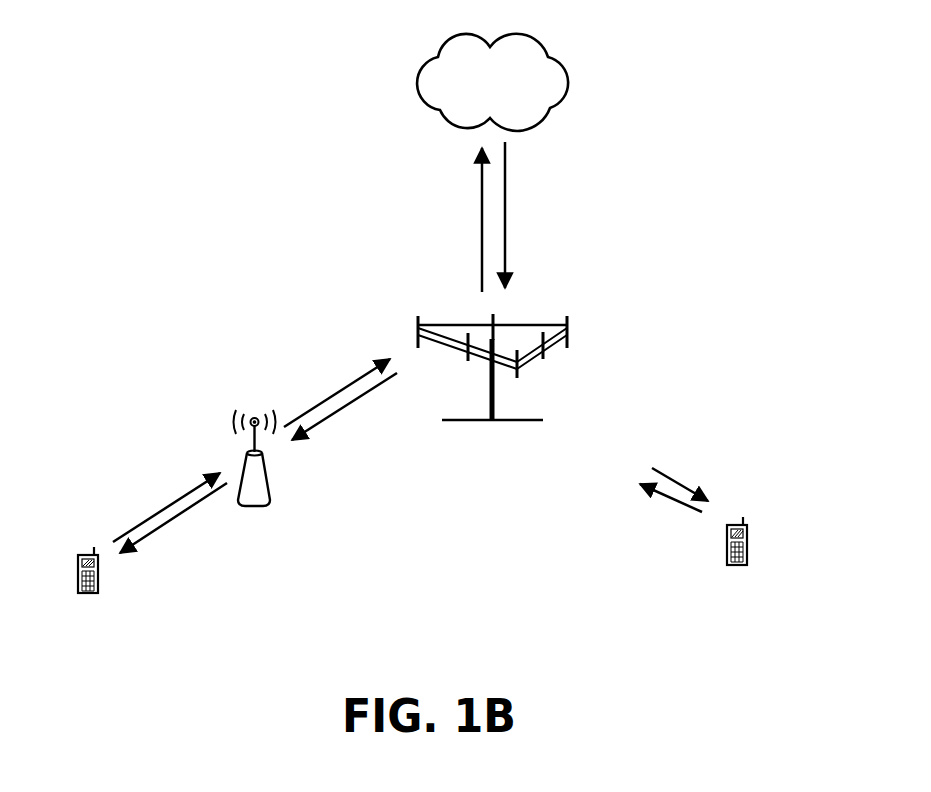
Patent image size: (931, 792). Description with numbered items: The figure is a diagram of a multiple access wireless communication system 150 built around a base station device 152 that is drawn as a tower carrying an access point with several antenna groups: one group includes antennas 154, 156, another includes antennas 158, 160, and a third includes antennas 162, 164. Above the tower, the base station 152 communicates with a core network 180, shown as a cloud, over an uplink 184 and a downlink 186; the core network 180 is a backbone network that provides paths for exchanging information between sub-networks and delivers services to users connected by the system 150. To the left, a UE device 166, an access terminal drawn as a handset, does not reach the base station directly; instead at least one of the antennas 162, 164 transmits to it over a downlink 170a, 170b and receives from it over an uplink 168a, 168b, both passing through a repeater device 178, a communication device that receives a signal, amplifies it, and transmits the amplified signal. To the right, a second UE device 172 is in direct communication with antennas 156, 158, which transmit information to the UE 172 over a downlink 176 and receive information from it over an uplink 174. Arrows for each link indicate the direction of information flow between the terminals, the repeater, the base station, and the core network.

The wireless communication system 150 is at (263, 178).
The base station device 152 is at (477, 422).
The antenna 154 is at (517, 378).
The antenna 156 is at (544, 358).
The antenna 158 is at (568, 340).
The antenna 160 is at (493, 315).
The antenna 162 is at (420, 319).
The antenna 164 is at (468, 362).
The UE device 166 is at (92, 552).
The uplink 168a is at (165, 509).
The uplink 168b is at (335, 398).
The downlink 170a is at (180, 515).
The downlink 170b is at (350, 405).
The UE device 172 is at (740, 518).
The uplink 174 is at (660, 497).
The downlink 176 is at (686, 488).
The repeater device 178 is at (270, 488).
The core network 180 is at (446, 47).
The uplink 184 is at (480, 193).
The downlink 186 is at (506, 181).